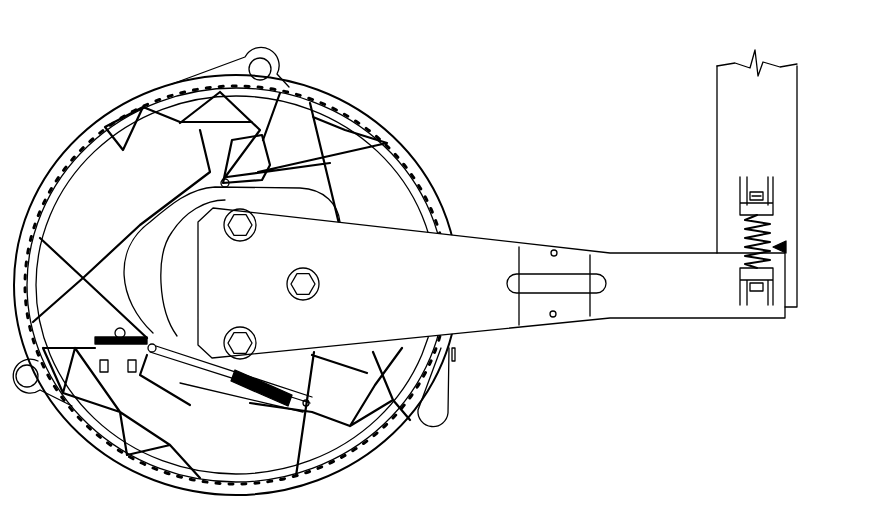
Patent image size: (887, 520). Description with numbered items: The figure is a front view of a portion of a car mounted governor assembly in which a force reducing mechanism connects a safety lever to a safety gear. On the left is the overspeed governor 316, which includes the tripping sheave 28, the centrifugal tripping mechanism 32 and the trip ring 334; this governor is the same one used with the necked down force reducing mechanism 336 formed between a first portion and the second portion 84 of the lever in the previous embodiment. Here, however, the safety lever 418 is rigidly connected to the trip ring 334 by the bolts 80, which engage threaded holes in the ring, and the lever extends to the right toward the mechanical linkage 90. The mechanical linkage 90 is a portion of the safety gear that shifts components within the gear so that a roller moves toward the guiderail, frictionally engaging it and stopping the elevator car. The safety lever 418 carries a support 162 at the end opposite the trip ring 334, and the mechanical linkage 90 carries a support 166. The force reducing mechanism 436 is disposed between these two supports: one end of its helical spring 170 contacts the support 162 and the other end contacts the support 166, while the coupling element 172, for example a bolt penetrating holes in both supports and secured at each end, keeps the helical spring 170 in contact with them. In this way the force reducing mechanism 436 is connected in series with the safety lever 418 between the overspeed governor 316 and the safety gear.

The overspeed governor 316 is at (320, 70).
The tripping sheave 28 is at (378, 114).
The centrifugal tripping mechanism 32 is at (407, 162).
The trip ring 334 is at (182, 257).
The force reducing mechanism 336 is at (313, 379).
The bolts 80 is at (248, 343).
The second portion 84 is at (497, 320).
The safety lever 418 is at (571, 260).
The mechanical linkage 90 is at (798, 172).
The support 166 is at (773, 190).
The coupling element 172 is at (757, 190).
The helical spring 170 is at (772, 226).
The force reducing mechanism 436 is at (784, 247).
The support 162 is at (775, 287).